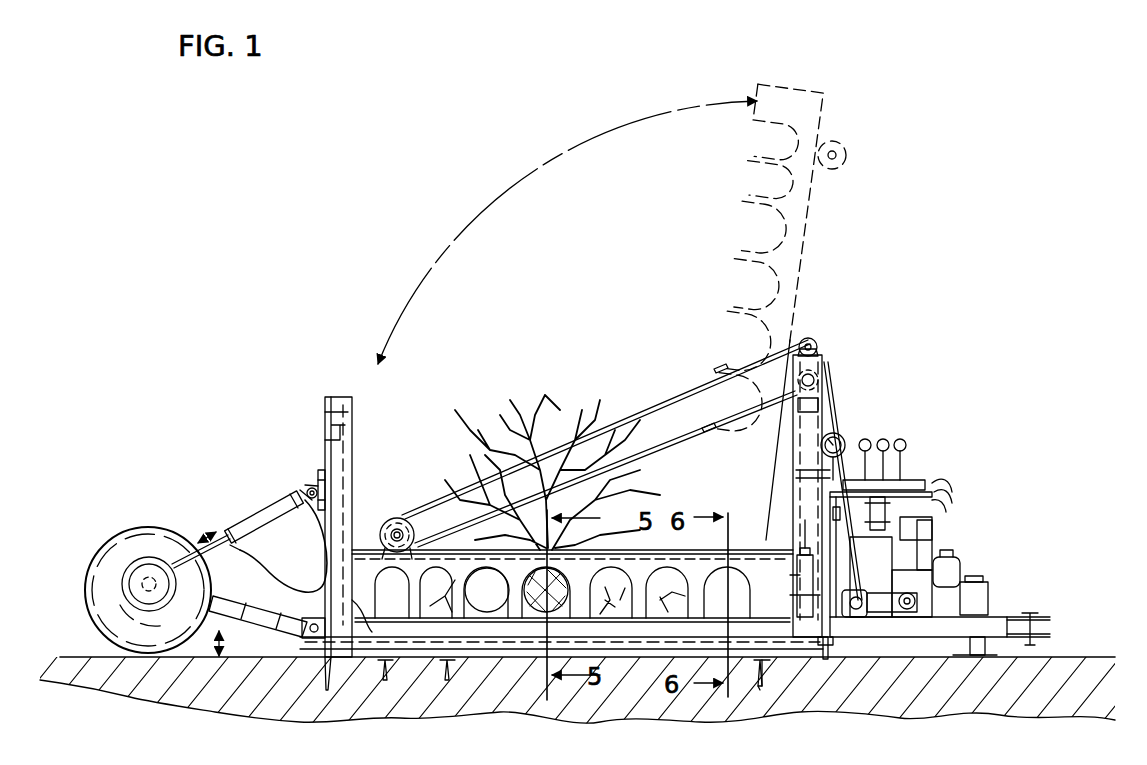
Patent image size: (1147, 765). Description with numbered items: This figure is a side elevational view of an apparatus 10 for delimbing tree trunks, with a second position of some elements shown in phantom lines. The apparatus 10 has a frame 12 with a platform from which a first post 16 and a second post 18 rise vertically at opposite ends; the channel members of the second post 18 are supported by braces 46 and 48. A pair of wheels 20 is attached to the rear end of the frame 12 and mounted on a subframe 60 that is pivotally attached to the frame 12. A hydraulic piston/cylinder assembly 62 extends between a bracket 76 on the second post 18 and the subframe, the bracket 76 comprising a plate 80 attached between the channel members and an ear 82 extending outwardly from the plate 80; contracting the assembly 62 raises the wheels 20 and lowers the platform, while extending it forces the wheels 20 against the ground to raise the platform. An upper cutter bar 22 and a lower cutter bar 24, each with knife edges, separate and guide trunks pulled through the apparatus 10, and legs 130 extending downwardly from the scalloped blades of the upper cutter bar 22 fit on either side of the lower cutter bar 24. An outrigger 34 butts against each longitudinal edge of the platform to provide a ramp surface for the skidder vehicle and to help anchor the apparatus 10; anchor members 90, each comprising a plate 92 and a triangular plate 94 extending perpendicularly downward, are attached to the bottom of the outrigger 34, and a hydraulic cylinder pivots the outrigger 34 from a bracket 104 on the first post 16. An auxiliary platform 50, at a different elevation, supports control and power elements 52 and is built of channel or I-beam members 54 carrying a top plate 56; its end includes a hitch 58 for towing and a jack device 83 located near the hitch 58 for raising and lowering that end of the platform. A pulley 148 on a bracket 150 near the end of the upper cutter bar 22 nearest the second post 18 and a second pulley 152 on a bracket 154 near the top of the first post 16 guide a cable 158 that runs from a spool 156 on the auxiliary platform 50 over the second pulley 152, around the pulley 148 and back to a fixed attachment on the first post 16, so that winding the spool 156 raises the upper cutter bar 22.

The apparatus for delimbing tree trunks 10 is at (496, 170).
The frame 12 is at (532, 517).
The first post 16 is at (822, 423).
The second post 18 is at (352, 460).
The wheels 20 is at (132, 527).
The upper cutter bar 22 is at (447, 550).
The lower cutter bar 24 is at (430, 636).
The outrigger 34 is at (481, 661).
The brace 46 is at (326, 578).
The brace 48 is at (372, 632).
The auxiliary platform 50 is at (994, 611).
The control and power elements 52 is at (962, 544).
The channel or I-beam members 54 is at (880, 638).
The top plate 56 is at (958, 594).
The hitch 58 is at (1034, 613).
The subframe 60 is at (245, 595).
The hydraulic piston/cylinder assembly 62 is at (239, 532).
The bracket 76 is at (306, 491).
The plate 80 is at (320, 466).
The ear 82 is at (318, 482).
The jack device 83 is at (968, 644).
The anchor members 90 is at (766, 671).
The plate 92 is at (760, 658).
The triangular plate 94 is at (759, 683).
The bracket 104 is at (800, 556).
The legs 130 is at (683, 596).
The pulley 148 is at (398, 518).
The bracket 150 is at (393, 540).
The second pulley 152 is at (811, 339).
The bracket 154 is at (820, 353).
The spool 156 is at (845, 649).
The cable 158 is at (649, 411).